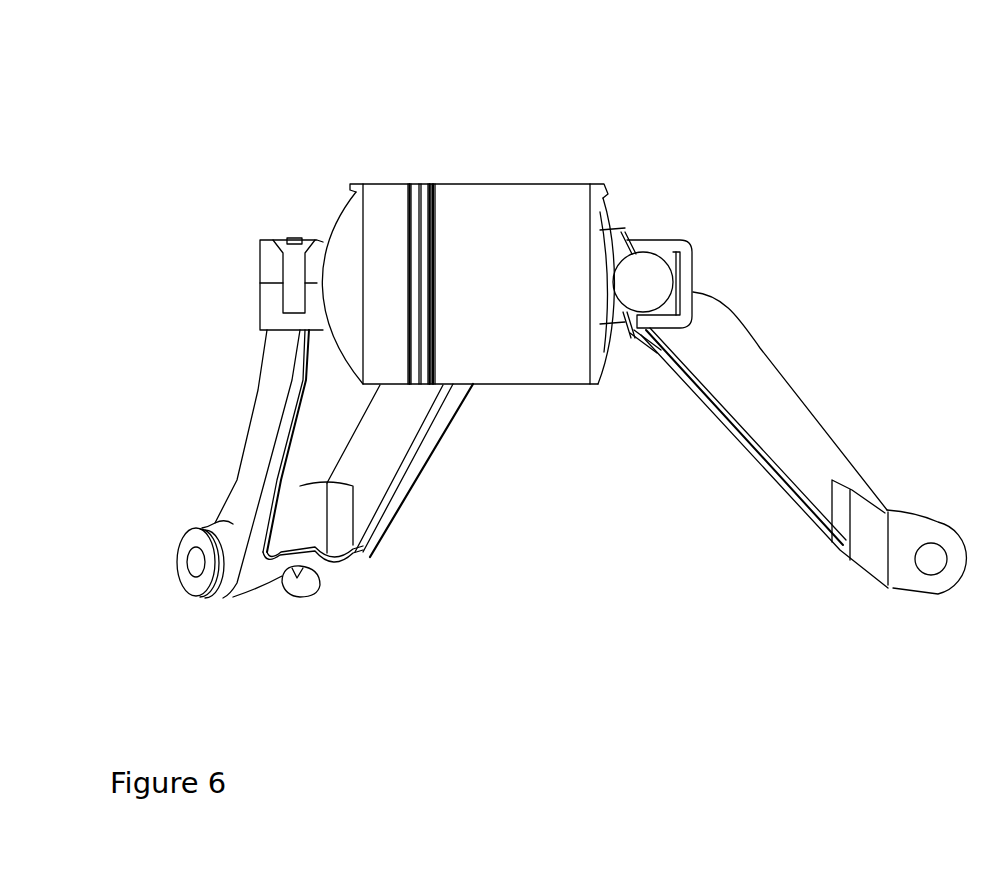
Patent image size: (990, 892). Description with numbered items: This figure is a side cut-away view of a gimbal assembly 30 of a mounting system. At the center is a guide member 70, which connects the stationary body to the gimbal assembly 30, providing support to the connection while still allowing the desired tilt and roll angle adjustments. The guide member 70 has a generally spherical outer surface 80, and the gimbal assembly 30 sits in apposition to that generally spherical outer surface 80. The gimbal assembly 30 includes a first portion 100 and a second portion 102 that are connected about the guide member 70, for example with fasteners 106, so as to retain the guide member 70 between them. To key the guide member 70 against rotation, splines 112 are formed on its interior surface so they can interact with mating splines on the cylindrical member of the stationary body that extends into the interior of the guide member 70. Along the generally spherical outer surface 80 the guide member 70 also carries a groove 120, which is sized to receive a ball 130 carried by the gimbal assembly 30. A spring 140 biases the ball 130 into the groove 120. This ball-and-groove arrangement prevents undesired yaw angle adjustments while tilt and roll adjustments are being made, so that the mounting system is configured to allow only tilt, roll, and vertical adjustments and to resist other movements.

The gimbal assembly 30 is at (813, 323).
The guide member 70 is at (452, 178).
The generally spherical outer surface 80 is at (340, 220).
The first portion 100 is at (693, 252).
The second portion 102 is at (715, 318).
The fasteners 106 is at (282, 238).
The splines 112 is at (410, 183).
The groove 120 is at (612, 348).
The ball 130 is at (640, 272).
The spring 140 is at (680, 270).